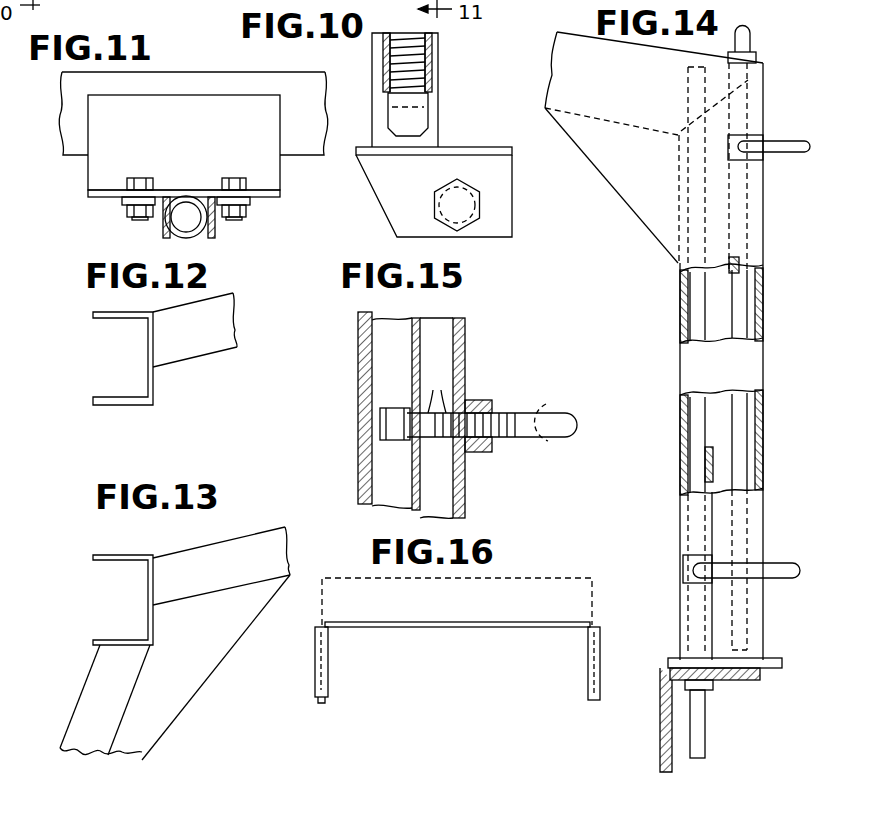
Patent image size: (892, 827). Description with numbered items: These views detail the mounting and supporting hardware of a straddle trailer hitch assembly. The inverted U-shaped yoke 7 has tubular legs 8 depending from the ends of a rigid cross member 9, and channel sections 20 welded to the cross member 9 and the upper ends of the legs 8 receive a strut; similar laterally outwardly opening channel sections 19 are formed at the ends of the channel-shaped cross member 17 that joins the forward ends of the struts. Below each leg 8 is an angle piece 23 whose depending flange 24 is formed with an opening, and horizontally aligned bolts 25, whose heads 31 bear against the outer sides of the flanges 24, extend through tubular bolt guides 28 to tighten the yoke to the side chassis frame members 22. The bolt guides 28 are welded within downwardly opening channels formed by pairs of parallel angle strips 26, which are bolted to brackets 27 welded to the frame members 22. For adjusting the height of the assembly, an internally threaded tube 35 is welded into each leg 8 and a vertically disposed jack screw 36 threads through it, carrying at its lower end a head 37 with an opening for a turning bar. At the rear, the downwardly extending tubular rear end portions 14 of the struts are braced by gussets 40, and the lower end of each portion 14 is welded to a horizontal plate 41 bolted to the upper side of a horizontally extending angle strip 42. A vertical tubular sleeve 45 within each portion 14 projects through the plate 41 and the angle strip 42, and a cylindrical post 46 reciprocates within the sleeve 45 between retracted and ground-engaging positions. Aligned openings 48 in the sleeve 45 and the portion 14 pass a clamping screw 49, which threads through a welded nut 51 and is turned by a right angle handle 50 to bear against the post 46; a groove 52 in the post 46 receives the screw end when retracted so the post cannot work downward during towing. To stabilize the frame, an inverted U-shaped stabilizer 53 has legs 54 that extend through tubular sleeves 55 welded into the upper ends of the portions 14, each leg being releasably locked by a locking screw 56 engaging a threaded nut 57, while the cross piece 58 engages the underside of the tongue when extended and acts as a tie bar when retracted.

In FIG. 13, the yoke 7 is at (85, 688).
In FIG. 10, the legs 8 is at (436, 95).
In FIG. 13, the legs 8 is at (83, 718).
In FIG. 13, the cross member 9 is at (239, 576).
In FIG. 14, the rear end portions 14 is at (765, 494).
In FIG. 15, the rear end portions 14 is at (466, 354).
In FIG. 16, the rear end portions 14 is at (329, 666).
In FIG. 12, the cross member 17 is at (221, 340).
In FIG. 12, the channel sections 19 is at (101, 312).
In FIG. 13, the channel sections 20 is at (118, 556).
In FIG. 11, the side chassis frame members 22 is at (291, 158).
In FIG. 10, the angle piece 23 is at (472, 147).
In FIG. 10, the depending flange 24 is at (504, 218).
In FIG. 11, the bolts 25 is at (184, 212).
In FIG. 10, the bolts 25 is at (437, 210).
In FIG. 11, the angle strips 26 is at (164, 216).
In FIG. 11, the brackets 27 is at (138, 169).
In FIG. 11, the tubular bolt guides 28 is at (193, 199).
In FIG. 10, the heads 31 is at (440, 194).
In FIG. 10, the internally threaded tube 35 is at (428, 70).
In FIG. 10, the jack screw 36 is at (430, 46).
In FIG. 10, the head 37 is at (418, 116).
In FIG. 14, the gussets 40 is at (666, 230).
In FIG. 14, the horizontal plate 41 is at (778, 657).
In FIG. 14, the angle strip 42 is at (748, 680).
In FIG. 14, the tubular sleeve 45 is at (686, 477).
In FIG. 15, the tubular sleeve 45 is at (373, 360).
In FIG. 14, the post 46 is at (700, 470).
In FIG. 15, the post 46 is at (386, 473).
In FIG. 15, the openings 48 is at (435, 389).
In FIG. 14, the clamping screw 49 is at (790, 577).
In FIG. 15, the clamping screw 49 is at (520, 413).
In FIG. 14, the handle 50 is at (757, 566).
In FIG. 15, the handle 50 is at (558, 407).
In FIG. 14, the nut 51 is at (684, 564).
In FIG. 15, the nut 51 is at (476, 400).
In FIG. 15, the groove 52 is at (380, 426).
In FIG. 14, the stabilizer 53 is at (750, 43).
In FIG. 16, the stabilizer 53 is at (519, 599).
In FIG. 14, the legs 54 is at (740, 302).
In FIG. 16, the legs 54 is at (329, 688).
In FIG. 14, the tubular sleeve 55 is at (758, 266).
In FIG. 14, the locking screw 56 is at (775, 143).
In FIG. 14, the threaded nut 57 is at (762, 160).
In FIG. 16, the cross piece 58 is at (467, 628).